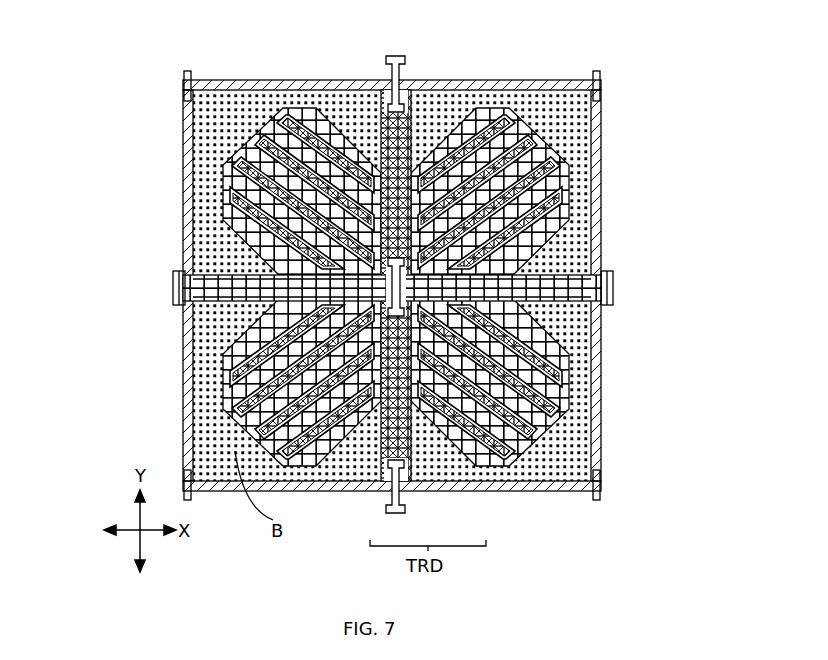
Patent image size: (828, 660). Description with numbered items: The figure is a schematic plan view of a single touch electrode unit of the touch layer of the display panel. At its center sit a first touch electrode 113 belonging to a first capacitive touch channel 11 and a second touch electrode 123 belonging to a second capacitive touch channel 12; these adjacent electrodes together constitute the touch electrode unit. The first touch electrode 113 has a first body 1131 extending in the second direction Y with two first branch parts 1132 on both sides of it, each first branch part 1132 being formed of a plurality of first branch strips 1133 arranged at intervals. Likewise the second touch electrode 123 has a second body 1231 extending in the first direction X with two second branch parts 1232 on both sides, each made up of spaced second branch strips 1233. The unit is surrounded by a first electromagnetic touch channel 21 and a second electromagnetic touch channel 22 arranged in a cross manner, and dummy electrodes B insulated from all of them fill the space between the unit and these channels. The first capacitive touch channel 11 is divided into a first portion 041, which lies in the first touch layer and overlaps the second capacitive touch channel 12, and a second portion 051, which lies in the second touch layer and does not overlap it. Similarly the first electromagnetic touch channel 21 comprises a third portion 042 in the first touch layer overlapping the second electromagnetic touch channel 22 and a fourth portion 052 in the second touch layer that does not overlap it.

The first electromagnetic touch channel 21 is at (98, 117).
The third portion 042 is at (174, 78).
The fourth portion 052 is at (178, 120).
The first capacitive touch channel 11 is at (98, 257).
The second portion 051 is at (216, 183).
The first portion 041 is at (173, 266).
The second capacitive touch channel 12 is at (272, 284).
The second electromagnetic touch channel 22 is at (228, 480).
The first branch strip 1133 is at (258, 124).
The first branch part 1132 is at (297, 110).
The first body 1131 is at (372, 102).
The second branch part 1232 is at (557, 197).
The second body 1231 is at (605, 280).
The second branch strip 1233 is at (548, 404).
The second touch electrode 123 is at (348, 403).
The first touch electrode 113 is at (463, 427).